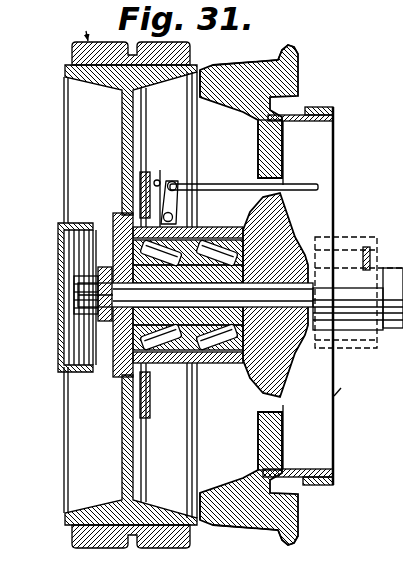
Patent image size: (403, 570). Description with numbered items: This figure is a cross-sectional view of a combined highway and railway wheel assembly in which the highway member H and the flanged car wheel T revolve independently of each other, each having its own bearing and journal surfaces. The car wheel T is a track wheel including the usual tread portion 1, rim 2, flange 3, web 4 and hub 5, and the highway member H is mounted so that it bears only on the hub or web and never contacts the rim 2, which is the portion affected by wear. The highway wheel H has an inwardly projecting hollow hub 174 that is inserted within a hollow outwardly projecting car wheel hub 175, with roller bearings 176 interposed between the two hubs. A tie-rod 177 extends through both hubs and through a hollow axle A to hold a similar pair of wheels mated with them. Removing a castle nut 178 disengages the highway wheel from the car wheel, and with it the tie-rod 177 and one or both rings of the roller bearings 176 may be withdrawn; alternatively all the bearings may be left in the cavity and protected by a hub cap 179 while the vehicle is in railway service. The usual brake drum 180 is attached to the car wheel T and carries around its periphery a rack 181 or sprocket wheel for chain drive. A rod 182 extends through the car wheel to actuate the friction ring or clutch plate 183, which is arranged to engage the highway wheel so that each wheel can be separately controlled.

The tread portion 1 is at (256, 62).
The rim 2 is at (215, 75).
The flange 3 is at (297, 49).
The web 4 is at (266, 156).
The hub 5 is at (278, 297).
The flanged car wheel T is at (301, 90).
The hollow axle A is at (342, 388).
The highway member H is at (232, 287).
The hollow hub 174 is at (118, 372).
The car wheel hub 175 is at (178, 364).
The roller bearings 176 is at (281, 244).
The tie-rod 177 is at (320, 268).
The castle nut 178 is at (71, 318).
The hub cap 179 is at (58, 372).
The brake drum 180 is at (321, 143).
The rack 181 is at (329, 106).
The rod 182 is at (320, 186).
The friction ring or clutch plate 183 is at (127, 165).